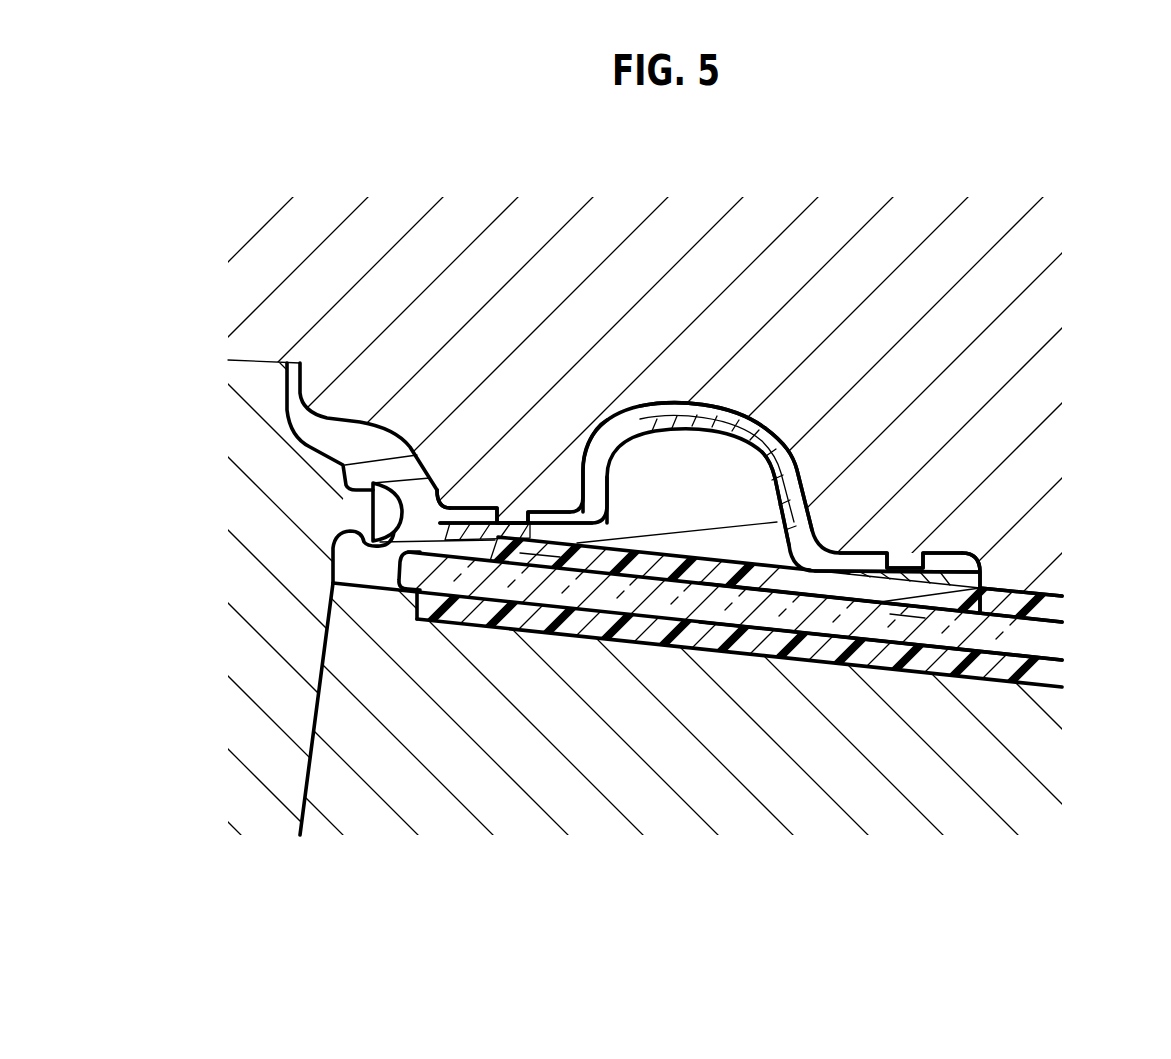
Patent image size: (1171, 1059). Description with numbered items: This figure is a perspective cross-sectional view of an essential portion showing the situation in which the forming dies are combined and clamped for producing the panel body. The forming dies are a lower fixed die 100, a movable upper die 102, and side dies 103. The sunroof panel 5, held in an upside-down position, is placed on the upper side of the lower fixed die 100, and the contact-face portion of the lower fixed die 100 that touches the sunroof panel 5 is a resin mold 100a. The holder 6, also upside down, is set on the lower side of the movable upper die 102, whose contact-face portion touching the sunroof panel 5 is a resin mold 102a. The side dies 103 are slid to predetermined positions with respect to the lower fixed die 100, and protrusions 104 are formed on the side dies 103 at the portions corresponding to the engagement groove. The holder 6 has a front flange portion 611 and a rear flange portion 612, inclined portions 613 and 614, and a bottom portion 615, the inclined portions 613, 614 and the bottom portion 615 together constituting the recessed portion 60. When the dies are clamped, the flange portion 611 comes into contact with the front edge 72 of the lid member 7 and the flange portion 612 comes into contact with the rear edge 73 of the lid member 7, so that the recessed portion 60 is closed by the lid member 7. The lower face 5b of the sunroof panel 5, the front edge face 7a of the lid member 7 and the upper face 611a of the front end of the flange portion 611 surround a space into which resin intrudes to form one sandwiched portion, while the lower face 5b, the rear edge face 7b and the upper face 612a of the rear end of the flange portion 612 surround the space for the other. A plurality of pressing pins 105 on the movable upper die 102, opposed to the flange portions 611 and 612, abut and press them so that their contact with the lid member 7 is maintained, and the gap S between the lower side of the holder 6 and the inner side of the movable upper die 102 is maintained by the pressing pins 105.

The movable upper die 102 is at (960, 303).
The resin mold 102a is at (1043, 597).
The side die 103 is at (290, 600).
The protrusion 104 is at (372, 515).
The pressing pin 105 is at (507, 525).
The lower fixed die 100 is at (675, 813).
The resin mold 100a is at (992, 677).
The sunroof panel 5 is at (1035, 640).
The lower face of the sunroof panel 5b is at (1055, 614).
The holder 6 is at (722, 416).
The recessed portion 60 is at (715, 462).
The front flange portion 611 is at (540, 537).
The upper face of the front end of the flange portion 611a is at (440, 538).
The rear flange portion 612 is at (853, 570).
The upper face of the rear end of the flange portion 612a is at (945, 580).
The inclined portion 613 is at (603, 493).
The inclined portion 614 is at (832, 440).
The bottom portion 615 is at (690, 430).
The lid member 7 is at (747, 578).
The front edge face of the lid member 7a is at (480, 555).
The front edge of the lid member 72 is at (523, 555).
The rear edge of the lid member 73 is at (867, 590).
The rear edge face of the lid member 7b is at (907, 597).
The gap S is at (647, 415).